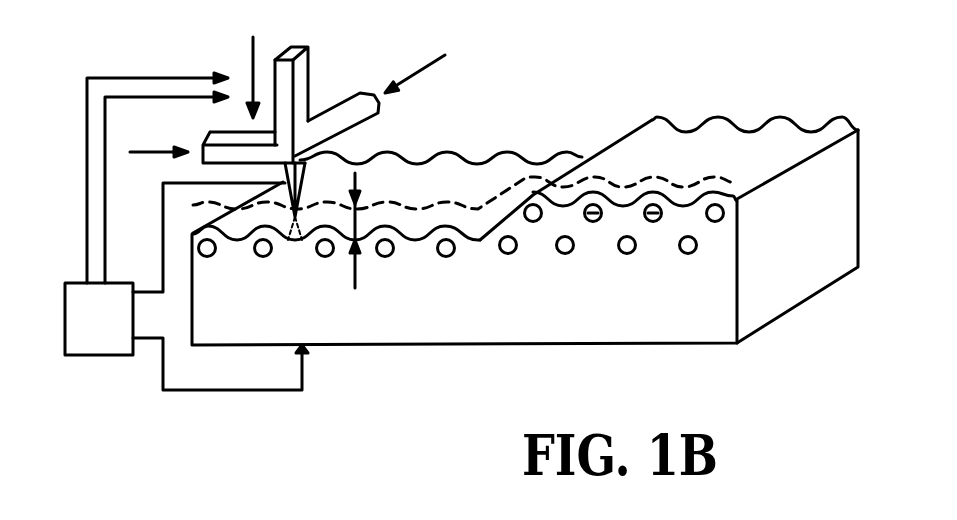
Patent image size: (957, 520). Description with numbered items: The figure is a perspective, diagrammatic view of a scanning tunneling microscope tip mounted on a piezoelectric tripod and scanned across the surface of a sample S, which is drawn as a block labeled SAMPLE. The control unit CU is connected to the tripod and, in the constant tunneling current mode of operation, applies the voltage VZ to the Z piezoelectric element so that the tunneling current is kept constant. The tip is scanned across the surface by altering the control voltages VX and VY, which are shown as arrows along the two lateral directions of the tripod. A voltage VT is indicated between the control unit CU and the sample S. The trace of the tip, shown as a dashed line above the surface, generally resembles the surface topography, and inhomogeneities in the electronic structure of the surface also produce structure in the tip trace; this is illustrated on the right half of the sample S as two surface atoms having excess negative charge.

The control unit CU is at (146, 214).
The Z control voltage VZ is at (253, 63).
The Y control voltage VY is at (155, 151).
The X control voltage VX is at (413, 74).
The tunneling voltage between tip and sample VT is at (220, 286).
The sample S is at (360, 255).
The sample SAMPLE is at (780, 288).